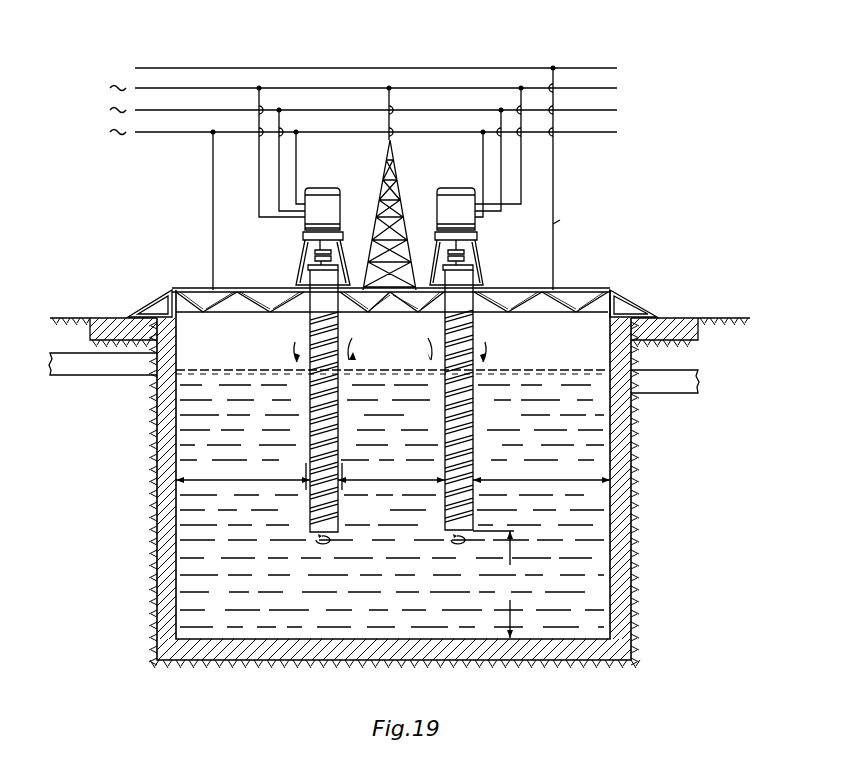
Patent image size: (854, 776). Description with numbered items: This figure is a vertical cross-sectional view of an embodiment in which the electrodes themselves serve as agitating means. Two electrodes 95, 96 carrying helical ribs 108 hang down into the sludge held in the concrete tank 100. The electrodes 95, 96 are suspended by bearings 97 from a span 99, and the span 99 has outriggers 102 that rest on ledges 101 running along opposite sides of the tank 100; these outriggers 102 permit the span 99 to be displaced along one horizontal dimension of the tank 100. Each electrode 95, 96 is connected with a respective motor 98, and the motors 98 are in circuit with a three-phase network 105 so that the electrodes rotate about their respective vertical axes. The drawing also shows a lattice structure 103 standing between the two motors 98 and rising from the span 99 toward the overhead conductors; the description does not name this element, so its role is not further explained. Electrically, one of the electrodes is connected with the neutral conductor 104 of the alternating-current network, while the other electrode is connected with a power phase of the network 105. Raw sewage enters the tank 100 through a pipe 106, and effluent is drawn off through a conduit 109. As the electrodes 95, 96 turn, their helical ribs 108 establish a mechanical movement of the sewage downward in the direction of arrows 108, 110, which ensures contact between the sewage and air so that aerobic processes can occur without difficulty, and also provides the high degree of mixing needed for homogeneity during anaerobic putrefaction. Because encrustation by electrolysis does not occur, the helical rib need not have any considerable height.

The electrode 95 is at (317, 508).
The electrode 96 is at (470, 430).
The bearing 97 is at (303, 279).
The motor 98 is at (338, 212).
The span 99 is at (245, 290).
The tank 100 is at (632, 452).
The ledge 101 is at (686, 332).
The outrigger 102 is at (143, 302).
The transmission tower 103 is at (398, 162).
The neutral conductor 104 is at (458, 67).
The three-phase network 105 is at (592, 133).
The pipe 106 is at (99, 367).
The helical rib / arrow 108 is at (295, 342).
The conduit 109 is at (678, 383).
The arrow 110 is at (485, 342).